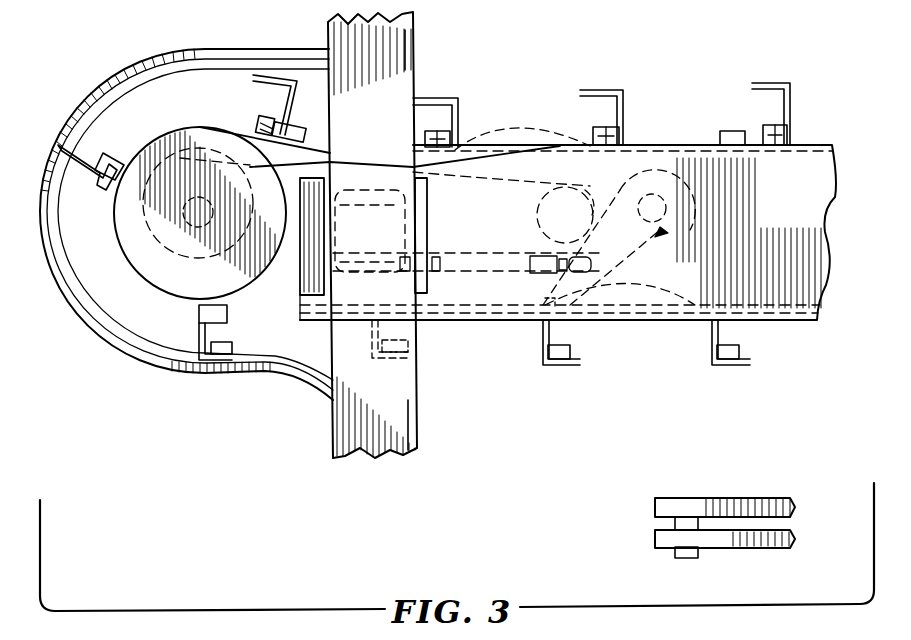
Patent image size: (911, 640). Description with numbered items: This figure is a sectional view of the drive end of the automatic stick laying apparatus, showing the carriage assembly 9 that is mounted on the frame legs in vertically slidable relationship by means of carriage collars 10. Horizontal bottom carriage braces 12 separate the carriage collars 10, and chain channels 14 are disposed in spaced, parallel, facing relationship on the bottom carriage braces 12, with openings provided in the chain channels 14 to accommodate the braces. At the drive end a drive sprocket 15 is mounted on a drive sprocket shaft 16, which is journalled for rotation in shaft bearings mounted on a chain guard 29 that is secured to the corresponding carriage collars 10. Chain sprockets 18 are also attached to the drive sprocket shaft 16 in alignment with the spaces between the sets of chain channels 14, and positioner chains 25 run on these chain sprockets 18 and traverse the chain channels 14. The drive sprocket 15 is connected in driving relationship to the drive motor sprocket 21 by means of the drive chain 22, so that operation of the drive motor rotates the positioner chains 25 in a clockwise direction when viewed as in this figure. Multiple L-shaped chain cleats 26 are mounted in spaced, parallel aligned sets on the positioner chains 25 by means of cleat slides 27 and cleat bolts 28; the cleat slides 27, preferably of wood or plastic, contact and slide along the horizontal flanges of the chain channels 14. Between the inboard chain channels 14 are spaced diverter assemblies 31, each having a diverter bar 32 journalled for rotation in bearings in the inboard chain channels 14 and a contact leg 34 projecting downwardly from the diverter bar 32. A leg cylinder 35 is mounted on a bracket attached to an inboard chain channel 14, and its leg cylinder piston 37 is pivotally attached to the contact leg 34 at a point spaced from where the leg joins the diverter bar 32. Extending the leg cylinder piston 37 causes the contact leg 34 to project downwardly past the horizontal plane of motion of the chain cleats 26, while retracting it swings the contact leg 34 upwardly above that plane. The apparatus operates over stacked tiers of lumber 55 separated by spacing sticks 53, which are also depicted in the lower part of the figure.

The carriage assembly 9 is at (424, 55).
The carriage collar 10 is at (386, 74).
The bottom carriage brace 12 is at (352, 242).
The chain channel 14 is at (750, 222).
The drive sprocket 15 is at (188, 128).
The drive sprocket shaft 16 is at (188, 225).
The chain sprocket 18 is at (136, 268).
The drive motor sprocket 21 is at (601, 193).
The drive chain 22 is at (470, 246).
The positioner chain 25 is at (726, 176).
The chain cleat 26 is at (252, 78).
The cleat slide 27 is at (198, 312).
The cleat bolt 28 is at (95, 216).
The chain guard 29 is at (230, 49).
The diverter assembly 31 is at (680, 220).
The diverter bar 32 is at (665, 196).
The contact leg 34 is at (662, 233).
The leg cylinder 35 is at (528, 255).
The leg cylinder piston 37 is at (565, 215).
The spacing stick 53 is at (110, 155).
The lumber 55 is at (745, 497).